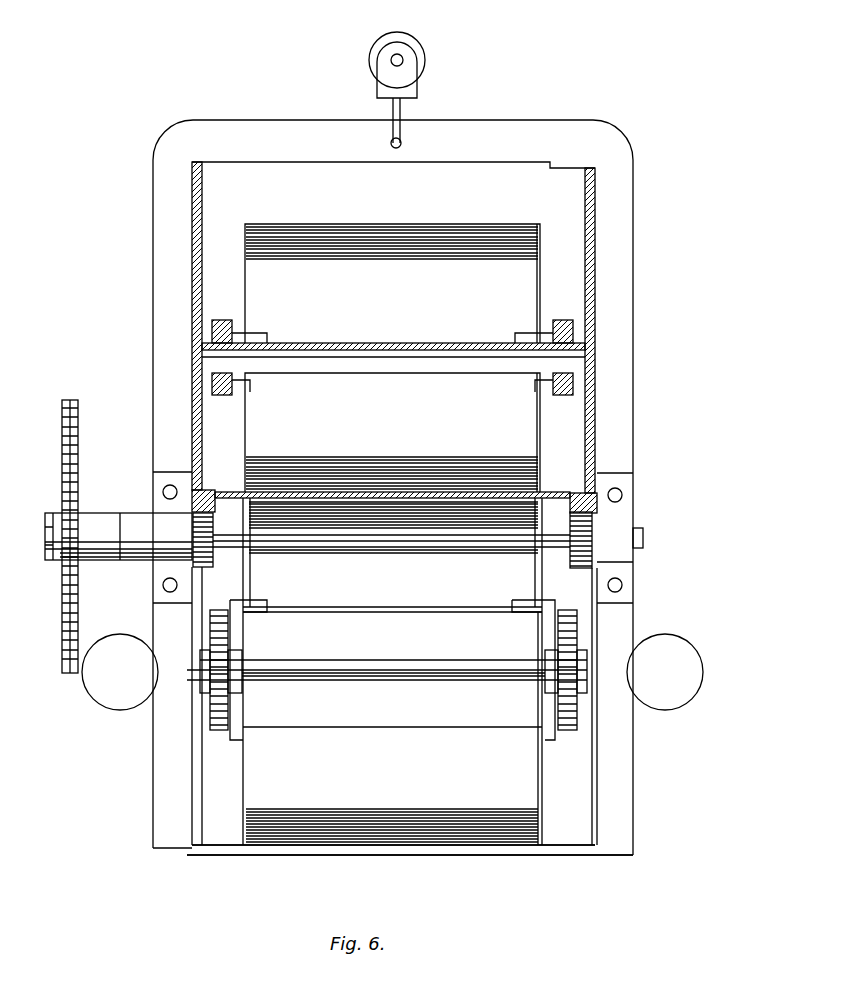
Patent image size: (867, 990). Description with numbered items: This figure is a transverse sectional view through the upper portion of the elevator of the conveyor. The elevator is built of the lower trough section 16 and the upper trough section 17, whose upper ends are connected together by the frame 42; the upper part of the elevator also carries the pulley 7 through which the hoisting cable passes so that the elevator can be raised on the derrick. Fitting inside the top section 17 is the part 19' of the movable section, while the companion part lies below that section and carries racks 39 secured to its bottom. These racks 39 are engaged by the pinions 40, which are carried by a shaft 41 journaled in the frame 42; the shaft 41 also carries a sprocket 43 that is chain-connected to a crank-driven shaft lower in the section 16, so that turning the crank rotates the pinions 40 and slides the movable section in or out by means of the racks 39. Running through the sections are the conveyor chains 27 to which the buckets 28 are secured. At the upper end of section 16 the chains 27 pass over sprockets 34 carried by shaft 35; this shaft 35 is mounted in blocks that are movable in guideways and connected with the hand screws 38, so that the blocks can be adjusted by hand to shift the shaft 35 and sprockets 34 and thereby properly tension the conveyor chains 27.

The pulley 7 is at (425, 48).
The frame 42 is at (163, 162).
The upper trough section 17 is at (595, 266).
The part of movable section 19' is at (146, 503).
The lower trough section 16 is at (203, 847).
The buckets 28 is at (395, 497).
The conveyor chains 27 is at (210, 378).
The pinions 40 is at (213, 560).
The racks 39 is at (592, 522).
The shaft 41 is at (645, 538).
The sprocket 43 is at (72, 400).
The hand screws 38 is at (108, 693).
The shaft 35 is at (412, 668).
The sprockets 34 is at (215, 735).